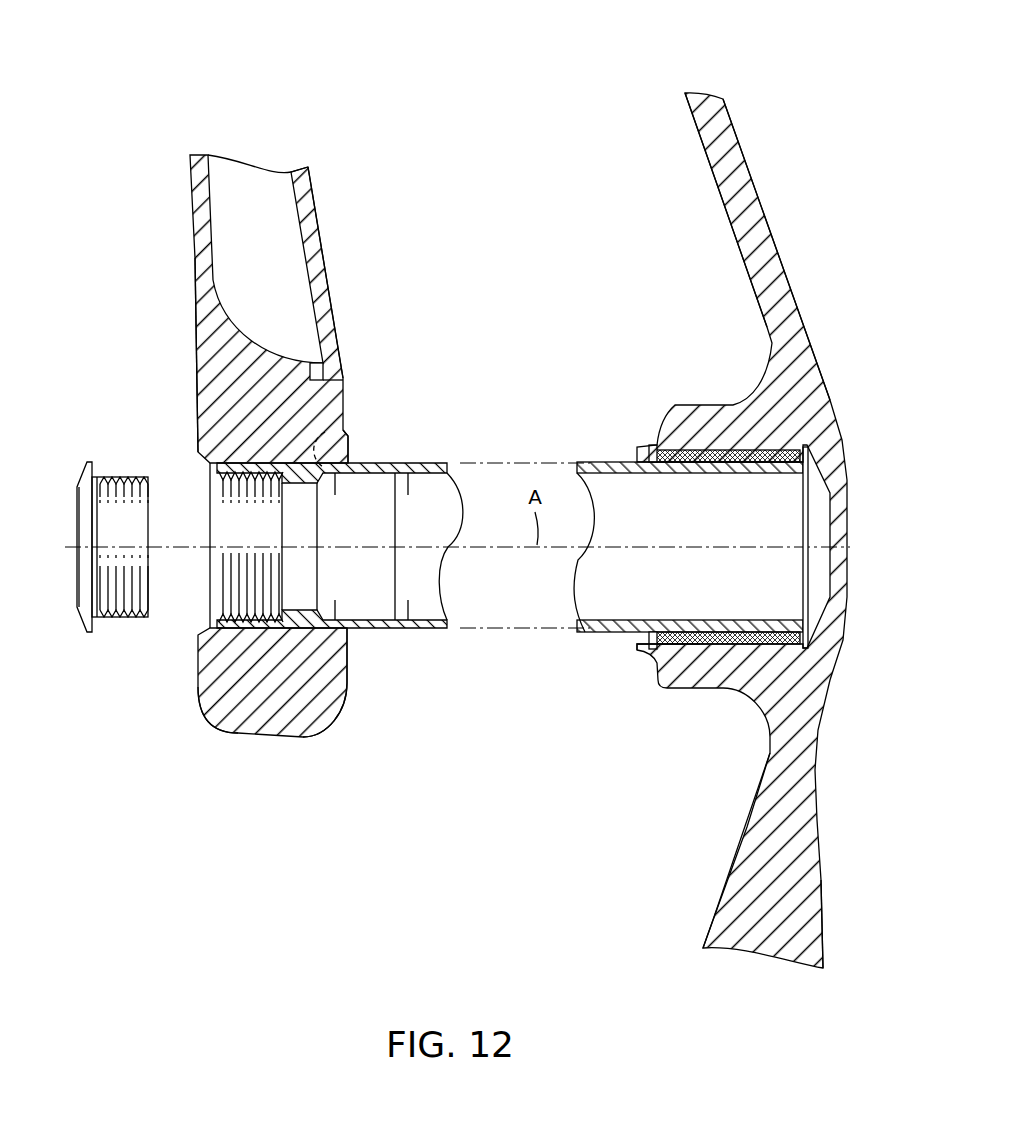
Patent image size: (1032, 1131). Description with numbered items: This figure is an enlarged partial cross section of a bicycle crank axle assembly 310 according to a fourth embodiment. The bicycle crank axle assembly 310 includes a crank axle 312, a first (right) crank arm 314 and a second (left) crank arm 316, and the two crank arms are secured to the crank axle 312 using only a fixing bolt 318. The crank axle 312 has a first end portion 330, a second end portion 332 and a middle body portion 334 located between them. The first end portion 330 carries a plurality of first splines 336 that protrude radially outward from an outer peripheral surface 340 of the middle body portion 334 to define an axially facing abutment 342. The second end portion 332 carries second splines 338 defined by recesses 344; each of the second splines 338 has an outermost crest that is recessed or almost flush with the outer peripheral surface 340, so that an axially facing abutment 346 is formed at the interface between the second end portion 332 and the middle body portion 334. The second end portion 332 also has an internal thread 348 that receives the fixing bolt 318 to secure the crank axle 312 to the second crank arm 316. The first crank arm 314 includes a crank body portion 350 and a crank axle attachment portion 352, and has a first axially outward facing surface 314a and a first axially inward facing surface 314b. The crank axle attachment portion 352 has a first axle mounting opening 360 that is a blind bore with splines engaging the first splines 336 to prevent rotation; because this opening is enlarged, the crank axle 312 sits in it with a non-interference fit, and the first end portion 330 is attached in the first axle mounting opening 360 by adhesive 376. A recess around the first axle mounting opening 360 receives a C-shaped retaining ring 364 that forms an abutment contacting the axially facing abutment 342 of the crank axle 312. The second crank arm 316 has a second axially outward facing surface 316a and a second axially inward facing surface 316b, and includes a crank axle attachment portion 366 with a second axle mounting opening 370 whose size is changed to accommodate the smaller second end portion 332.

The bicycle crank axle assembly 310 is at (618, 49).
The crank axle 312 is at (451, 439).
The first (right) crank arm 314 is at (745, 552).
The first axially outward facing surface 314a is at (827, 943).
The first axially inward facing surface 314b is at (720, 897).
The second (left) crank arm 316 is at (182, 258).
The second axially outward facing surface 316a is at (197, 333).
The second axially inward facing surface 316b is at (330, 285).
The fixing bolt 318 is at (72, 478).
The first end portion 330 is at (720, 654).
The second end portion 332 is at (264, 458).
The middle body portion 334 is at (308, 577).
The first splines 336 is at (712, 452).
The second splines 338 is at (285, 628).
The outer peripheral surface 340 is at (668, 560).
The axially facing abutment 342 is at (687, 641).
The recesses 344 is at (349, 668).
The axially facing abutment 346 is at (346, 420).
The internal thread 348 is at (240, 487).
The crank body portion 350 is at (743, 823).
The crank axle attachment portion 352 is at (817, 353).
The first axle mounting opening 360 is at (740, 470).
The C-shaped retaining ring 364 is at (640, 445).
The crank axle attachment portion 366 is at (227, 707).
The second axle mounting opening 370 is at (242, 607).
The adhesive 376 is at (752, 642).